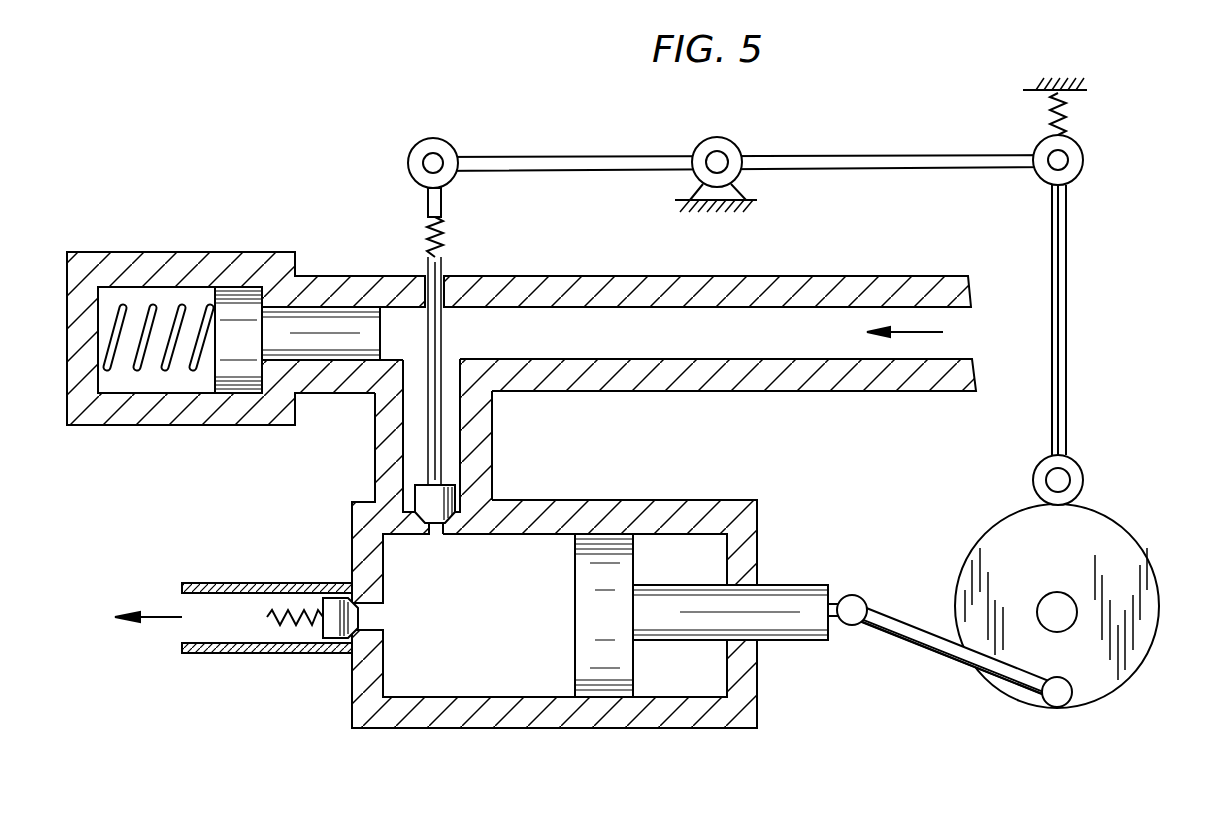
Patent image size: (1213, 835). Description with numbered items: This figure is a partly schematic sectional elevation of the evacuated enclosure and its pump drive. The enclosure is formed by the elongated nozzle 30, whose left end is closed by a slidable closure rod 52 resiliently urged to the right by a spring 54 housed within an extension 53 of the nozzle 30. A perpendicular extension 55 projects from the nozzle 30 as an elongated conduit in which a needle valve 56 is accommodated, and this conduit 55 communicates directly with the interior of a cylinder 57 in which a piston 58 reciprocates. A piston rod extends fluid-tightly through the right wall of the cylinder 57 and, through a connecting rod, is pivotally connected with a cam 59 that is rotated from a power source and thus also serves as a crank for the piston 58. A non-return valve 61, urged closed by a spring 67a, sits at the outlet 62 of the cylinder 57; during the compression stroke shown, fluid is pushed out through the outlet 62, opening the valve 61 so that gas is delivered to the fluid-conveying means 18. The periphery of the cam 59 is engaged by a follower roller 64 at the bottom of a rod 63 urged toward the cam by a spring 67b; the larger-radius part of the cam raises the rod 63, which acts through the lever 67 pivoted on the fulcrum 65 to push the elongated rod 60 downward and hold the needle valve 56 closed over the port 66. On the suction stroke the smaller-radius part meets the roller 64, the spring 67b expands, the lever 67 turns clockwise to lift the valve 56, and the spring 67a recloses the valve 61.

The fluid-conveying means 18 is at (208, 638).
The elongated nozzle 30 is at (733, 383).
The slidable closure rod 52 is at (325, 318).
The extension 53 is at (223, 263).
The spring 54 is at (131, 363).
The perpendicular extension 55 is at (483, 420).
The needle valve 56 is at (447, 496).
The cylinder 57 is at (608, 715).
The piston 58 is at (583, 605).
The cam 59 is at (1150, 633).
The elongated rod 60 is at (430, 203).
The non-return valve 61 is at (322, 597).
The outlet 62 is at (375, 613).
The rod 63 is at (1068, 333).
The follower roller 64 is at (1036, 481).
The fulcrum 65 is at (723, 146).
The port 66 is at (436, 535).
The lever 67 is at (835, 160).
The spring 67a is at (445, 230).
The spring 67b is at (1044, 112).